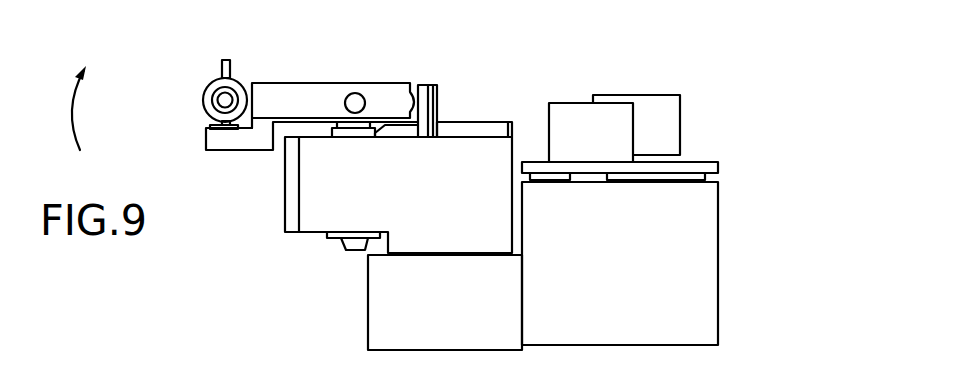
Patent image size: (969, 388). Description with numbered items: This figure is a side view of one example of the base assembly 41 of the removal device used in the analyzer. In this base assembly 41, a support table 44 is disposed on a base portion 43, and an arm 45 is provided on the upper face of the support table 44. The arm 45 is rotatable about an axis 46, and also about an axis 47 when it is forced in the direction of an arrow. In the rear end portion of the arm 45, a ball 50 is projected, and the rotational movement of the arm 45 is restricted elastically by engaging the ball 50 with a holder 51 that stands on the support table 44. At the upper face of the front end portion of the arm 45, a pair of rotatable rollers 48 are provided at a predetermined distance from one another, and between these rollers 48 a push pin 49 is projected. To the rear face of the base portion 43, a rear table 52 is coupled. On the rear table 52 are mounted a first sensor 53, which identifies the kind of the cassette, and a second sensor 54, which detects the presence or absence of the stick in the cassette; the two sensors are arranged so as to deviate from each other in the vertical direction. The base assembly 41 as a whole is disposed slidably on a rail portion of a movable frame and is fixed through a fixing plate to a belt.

The base assembly 41 is at (774, 205).
The base portion 43 is at (370, 277).
The support table 44 is at (328, 211).
The arm 45 is at (310, 92).
The axis 46 is at (348, 253).
The axis 47 is at (356, 96).
The rotatable rollers 48 is at (203, 100).
The push pin 49 is at (230, 61).
The ball 50 is at (414, 88).
The holder 51 is at (453, 128).
The rear table 52 is at (703, 250).
The first sensor 53 is at (565, 110).
The second sensor 54 is at (658, 107).